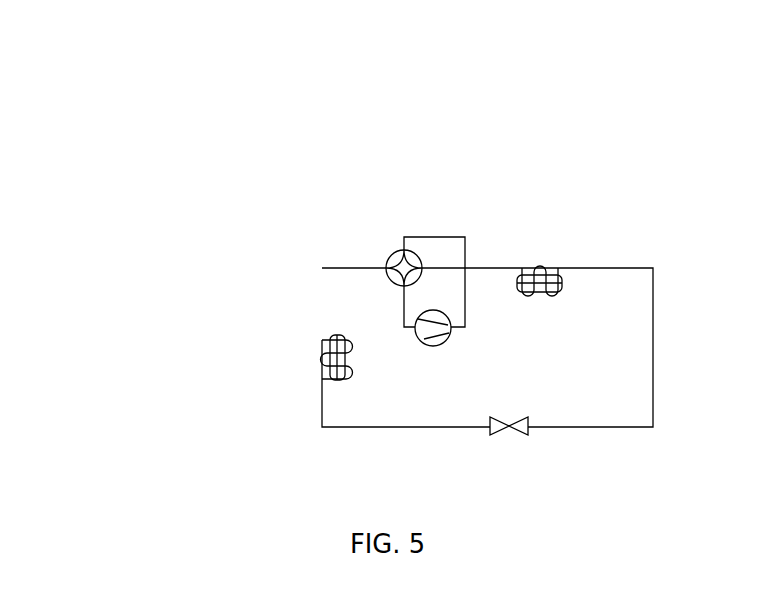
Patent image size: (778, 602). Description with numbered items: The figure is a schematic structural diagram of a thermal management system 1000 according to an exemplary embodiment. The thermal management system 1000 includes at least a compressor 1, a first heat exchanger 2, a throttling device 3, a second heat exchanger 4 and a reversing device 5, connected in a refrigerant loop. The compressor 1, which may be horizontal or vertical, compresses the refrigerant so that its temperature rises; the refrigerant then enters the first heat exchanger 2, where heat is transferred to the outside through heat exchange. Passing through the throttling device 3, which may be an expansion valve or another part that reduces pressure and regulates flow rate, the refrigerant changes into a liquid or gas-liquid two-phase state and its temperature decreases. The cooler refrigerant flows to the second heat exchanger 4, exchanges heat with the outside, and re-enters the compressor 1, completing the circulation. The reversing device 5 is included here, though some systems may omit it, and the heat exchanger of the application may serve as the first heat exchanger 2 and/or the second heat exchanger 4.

The thermal management system 1000 is at (295, 190).
The compressor 1 is at (417, 323).
The first heat exchanger 2 is at (553, 268).
The throttling device 3 is at (525, 432).
The second heat exchanger 4 is at (327, 373).
The reversing device 5 is at (388, 256).